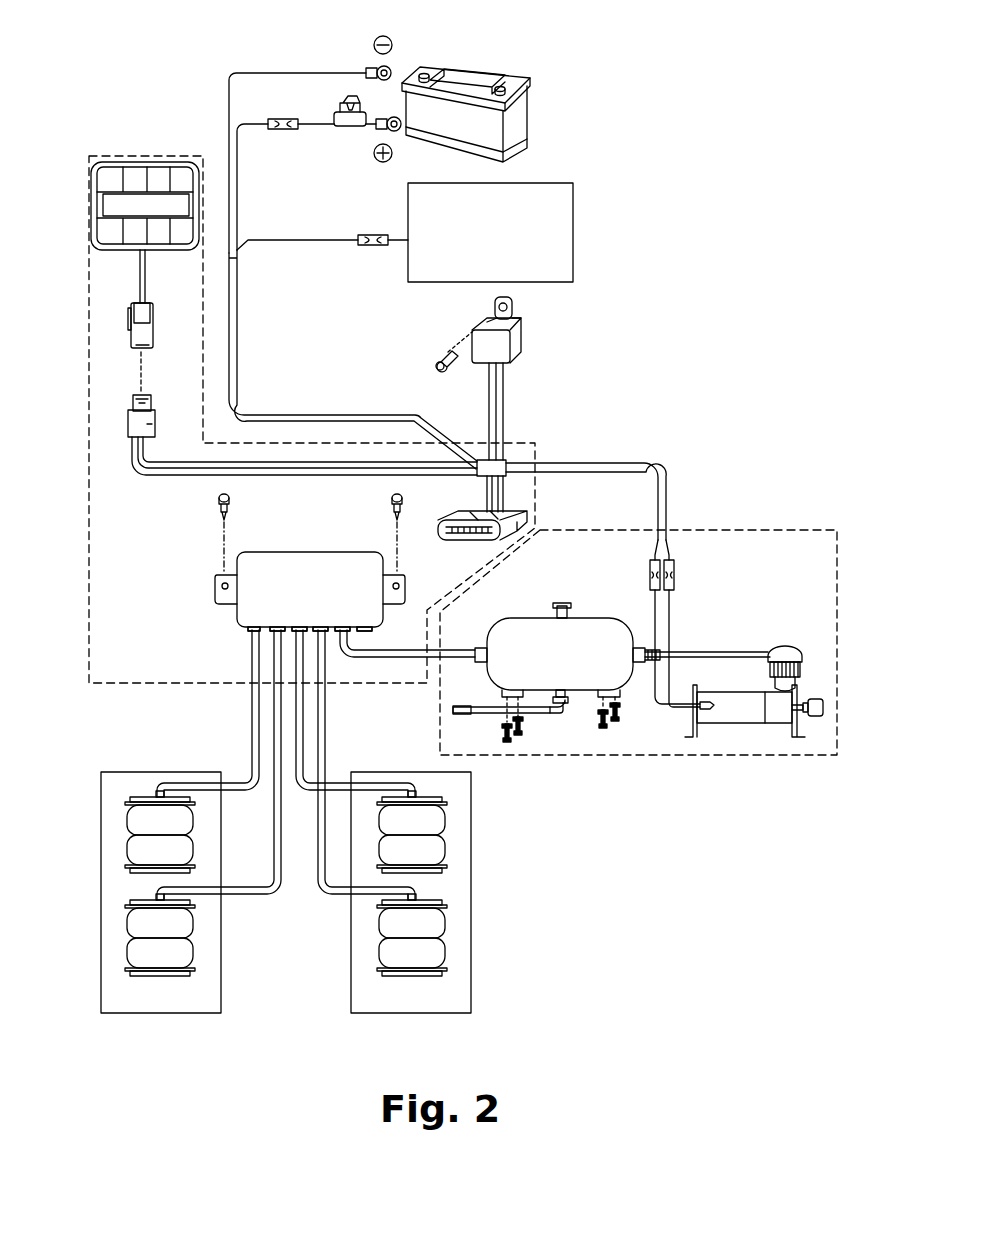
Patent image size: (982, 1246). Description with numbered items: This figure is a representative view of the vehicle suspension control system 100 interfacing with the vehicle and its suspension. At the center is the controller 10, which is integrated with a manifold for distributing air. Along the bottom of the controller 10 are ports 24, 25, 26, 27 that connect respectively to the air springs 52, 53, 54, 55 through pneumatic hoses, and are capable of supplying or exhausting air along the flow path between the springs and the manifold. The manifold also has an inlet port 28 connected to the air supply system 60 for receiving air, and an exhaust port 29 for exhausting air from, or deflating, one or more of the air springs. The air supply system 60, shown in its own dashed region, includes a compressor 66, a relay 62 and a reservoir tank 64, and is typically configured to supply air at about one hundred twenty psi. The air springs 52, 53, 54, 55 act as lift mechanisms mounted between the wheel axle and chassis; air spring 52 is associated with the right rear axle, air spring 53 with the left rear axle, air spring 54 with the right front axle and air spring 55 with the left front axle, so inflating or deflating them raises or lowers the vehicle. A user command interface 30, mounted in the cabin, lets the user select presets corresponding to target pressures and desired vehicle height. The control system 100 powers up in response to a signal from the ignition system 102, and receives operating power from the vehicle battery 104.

The controller 10 is at (278, 552).
The port 24 is at (254, 631).
The port 25 is at (277, 631).
The port 26 is at (300, 631).
The port 27 is at (322, 631).
The inlet port 28 is at (342, 631).
The exhaust port 29 is at (368, 631).
The user command interface 30 is at (168, 250).
The air spring 52 is at (446, 922).
The air spring 53 is at (446, 820).
The air spring 54 is at (127, 924).
The air spring 55 is at (127, 822).
The air supply system 60 is at (745, 530).
The relay 62 is at (518, 334).
The reservoir tank 64 is at (518, 618).
The compressor 66 is at (780, 650).
The control system 100 is at (90, 530).
The ignition system 102 is at (534, 183).
The vehicle battery 104 is at (473, 62).